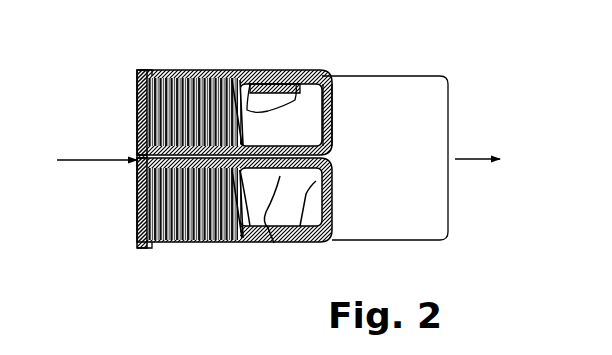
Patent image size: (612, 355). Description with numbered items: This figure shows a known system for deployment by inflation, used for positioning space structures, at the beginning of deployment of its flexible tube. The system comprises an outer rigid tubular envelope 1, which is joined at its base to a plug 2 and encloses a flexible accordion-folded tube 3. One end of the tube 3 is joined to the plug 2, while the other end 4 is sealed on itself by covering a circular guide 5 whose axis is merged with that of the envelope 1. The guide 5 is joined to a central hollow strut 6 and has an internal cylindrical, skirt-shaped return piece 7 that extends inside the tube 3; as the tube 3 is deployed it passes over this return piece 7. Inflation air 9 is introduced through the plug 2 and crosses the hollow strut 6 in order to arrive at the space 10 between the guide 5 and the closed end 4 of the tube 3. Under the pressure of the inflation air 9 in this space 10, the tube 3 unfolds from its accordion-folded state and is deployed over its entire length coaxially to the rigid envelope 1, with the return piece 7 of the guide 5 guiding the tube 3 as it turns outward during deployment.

The outer rigid tubular envelope 1 is at (243, 74).
The plug 2 is at (136, 208).
The flexible accordion-folded tube 3 is at (297, 74).
The other end of the tube 4 is at (415, 74).
The circular guide 5 is at (331, 104).
The central hollow strut 6 is at (274, 243).
The internal cylindrical skirt-shaped return piece 7 is at (331, 192).
The inflation air 9 is at (90, 97).
The space 10 is at (406, 170).